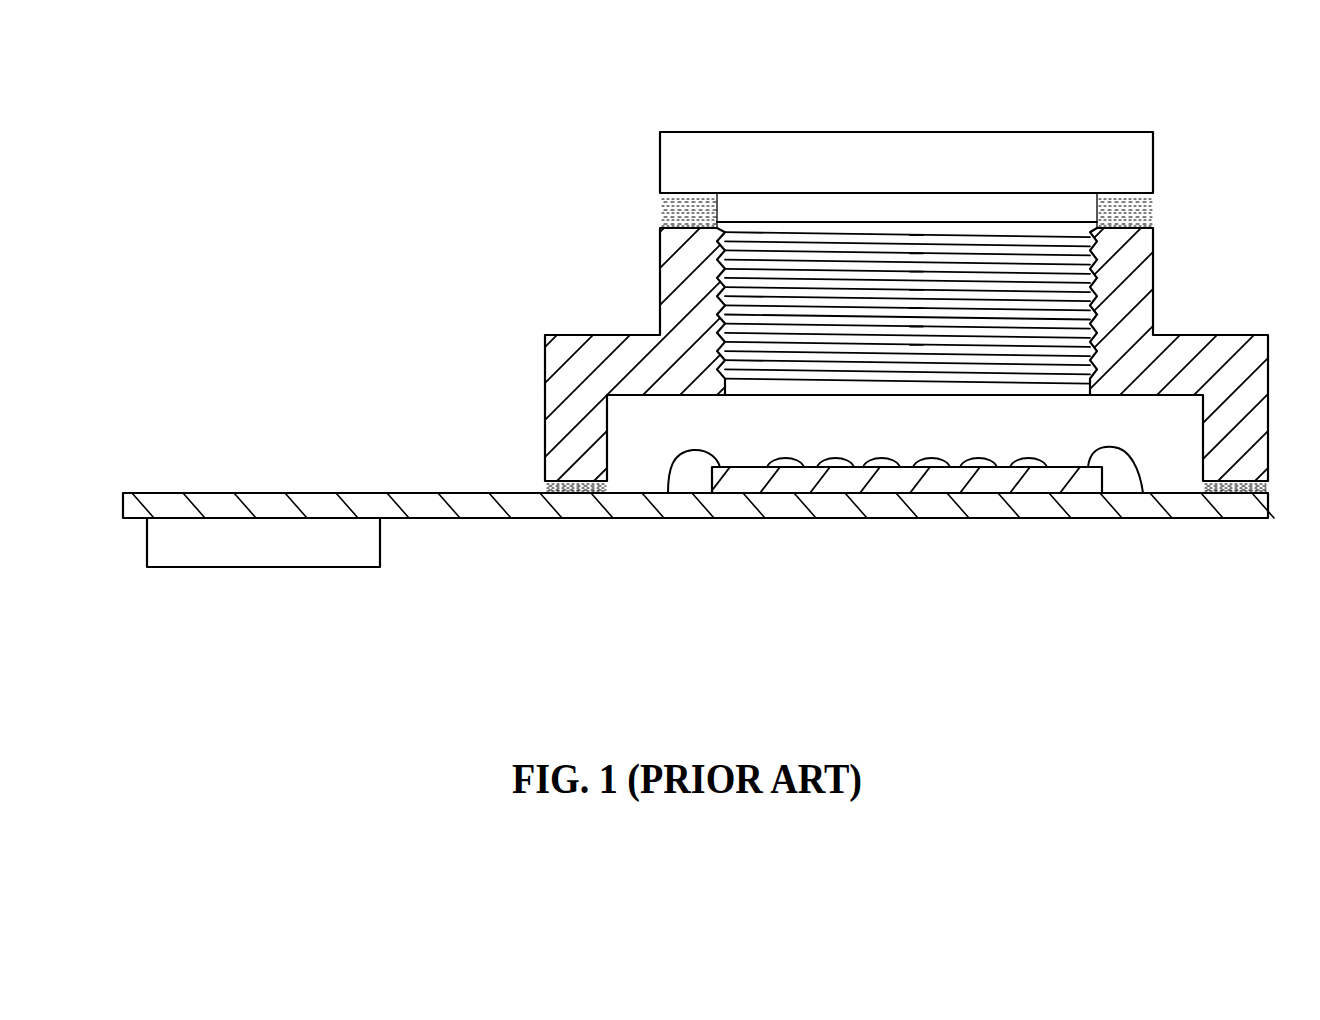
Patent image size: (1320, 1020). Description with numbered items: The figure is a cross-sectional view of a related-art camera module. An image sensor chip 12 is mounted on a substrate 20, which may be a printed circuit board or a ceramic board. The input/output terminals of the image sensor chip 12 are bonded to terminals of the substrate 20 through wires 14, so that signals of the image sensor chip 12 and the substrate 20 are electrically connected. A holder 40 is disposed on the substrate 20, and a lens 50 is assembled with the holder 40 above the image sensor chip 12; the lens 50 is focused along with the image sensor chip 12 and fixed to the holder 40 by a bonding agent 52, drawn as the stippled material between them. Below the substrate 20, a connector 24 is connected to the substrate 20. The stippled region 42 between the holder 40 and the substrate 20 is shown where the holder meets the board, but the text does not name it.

The image sensor chip 12 is at (978, 478).
The wires 14 is at (1142, 468).
The substrate 20 is at (745, 518).
The connector 24 is at (262, 542).
The holder 40 is at (1178, 357).
The adhesive 42 is at (543, 487).
The lens 50 is at (1135, 159).
The bonding agent 52 is at (673, 218).